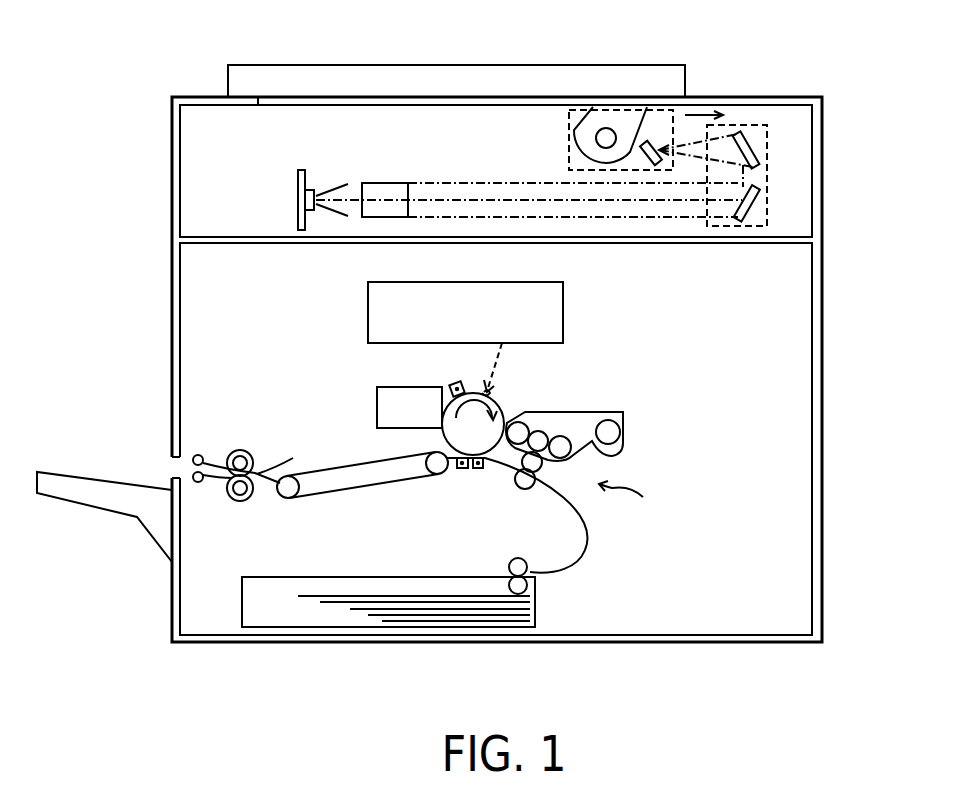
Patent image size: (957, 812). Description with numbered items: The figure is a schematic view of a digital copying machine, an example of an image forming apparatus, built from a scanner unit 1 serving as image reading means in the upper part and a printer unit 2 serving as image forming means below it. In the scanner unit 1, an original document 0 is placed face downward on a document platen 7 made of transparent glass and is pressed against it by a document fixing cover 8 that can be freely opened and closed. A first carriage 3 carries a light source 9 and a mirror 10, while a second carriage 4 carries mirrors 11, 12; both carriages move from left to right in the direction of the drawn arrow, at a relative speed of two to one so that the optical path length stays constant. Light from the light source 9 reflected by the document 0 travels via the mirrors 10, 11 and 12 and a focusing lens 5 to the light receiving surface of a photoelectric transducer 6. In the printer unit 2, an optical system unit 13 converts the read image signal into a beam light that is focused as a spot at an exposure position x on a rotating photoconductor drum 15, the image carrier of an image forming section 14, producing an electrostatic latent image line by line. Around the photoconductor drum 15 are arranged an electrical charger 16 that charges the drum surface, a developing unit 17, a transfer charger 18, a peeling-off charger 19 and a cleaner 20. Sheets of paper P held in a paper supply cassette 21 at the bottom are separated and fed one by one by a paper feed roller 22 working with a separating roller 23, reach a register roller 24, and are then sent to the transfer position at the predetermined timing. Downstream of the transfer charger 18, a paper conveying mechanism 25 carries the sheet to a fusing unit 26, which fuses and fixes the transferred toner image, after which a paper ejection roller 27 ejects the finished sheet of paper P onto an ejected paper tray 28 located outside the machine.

The original document 0 is at (452, 97).
The scanner unit 1 is at (207, 180).
The printer unit 2 is at (790, 447).
The first carriage 3 is at (585, 107).
The second carriage 4 is at (750, 125).
The focusing lens 5 is at (388, 183).
The photoelectric transducer 6 is at (298, 185).
The document platen 7 is at (305, 105).
The document fixing cover 8 is at (375, 75).
The light source 9 is at (607, 128).
The mirror 10 is at (650, 142).
The mirror 11 is at (753, 147).
The mirror 12 is at (755, 207).
The optical system unit 13 is at (563, 310).
The image forming section 14 is at (559, 515).
The photoconductor drum 15 is at (445, 436).
The electrical charger 16 is at (452, 384).
The developing unit 17 is at (623, 424).
The transfer charger 18 is at (478, 470).
The peeling-off charger 19 is at (461, 470).
The cleaner 20 is at (377, 407).
The paper supply cassette 21 is at (313, 617).
The paper feed roller 22 is at (527, 585).
The separating roller 23 is at (509, 563).
The register roller 24 is at (527, 490).
The paper conveying mechanism 25 is at (330, 492).
The fusing unit 26 is at (240, 450).
The paper ejection roller 27 is at (198, 483).
The ejected paper tray 28 is at (65, 500).
The sheet of paper P is at (433, 617).
The exposure position x is at (492, 395).